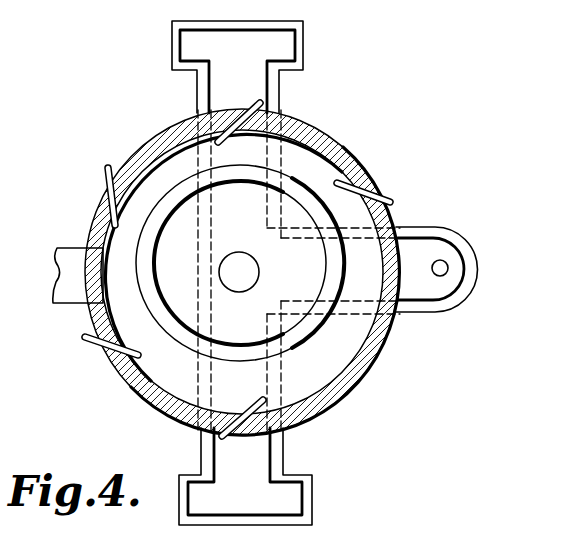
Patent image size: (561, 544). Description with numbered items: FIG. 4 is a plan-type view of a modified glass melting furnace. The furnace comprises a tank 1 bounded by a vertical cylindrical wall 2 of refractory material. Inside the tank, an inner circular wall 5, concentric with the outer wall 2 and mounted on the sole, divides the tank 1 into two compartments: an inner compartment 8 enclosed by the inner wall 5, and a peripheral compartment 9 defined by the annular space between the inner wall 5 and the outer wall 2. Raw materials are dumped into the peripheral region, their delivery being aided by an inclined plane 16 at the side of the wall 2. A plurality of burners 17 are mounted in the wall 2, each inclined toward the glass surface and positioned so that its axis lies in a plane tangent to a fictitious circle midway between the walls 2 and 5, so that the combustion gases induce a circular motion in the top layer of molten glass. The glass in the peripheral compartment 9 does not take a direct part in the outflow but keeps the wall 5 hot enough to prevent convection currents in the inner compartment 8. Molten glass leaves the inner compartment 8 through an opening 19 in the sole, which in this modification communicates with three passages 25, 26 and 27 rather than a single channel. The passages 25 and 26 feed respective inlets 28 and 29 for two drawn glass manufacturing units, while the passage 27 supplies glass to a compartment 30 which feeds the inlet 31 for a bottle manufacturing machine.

The tank 1 is at (330, 135).
The vertical cylindrical wall 2 is at (360, 160).
The inner circular wall 5 is at (165, 210).
The inner compartment 8 is at (187, 269).
The peripheral compartment 9 is at (177, 388).
The inclined plane 16 is at (77, 258).
The burners 17 is at (85, 340).
The opening 19 is at (245, 267).
The passage 25 is at (253, 150).
The passage 26 is at (267, 390).
The passage 27 is at (367, 285).
The inlet 28 is at (280, 48).
The inlet 29 is at (288, 498).
The compartment 30 is at (442, 247).
The inlet 31 is at (448, 270).